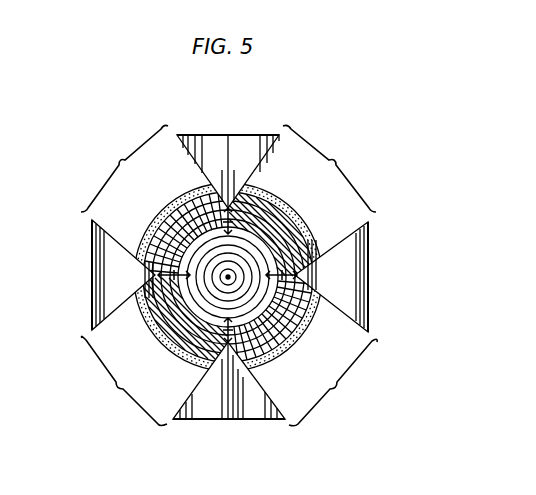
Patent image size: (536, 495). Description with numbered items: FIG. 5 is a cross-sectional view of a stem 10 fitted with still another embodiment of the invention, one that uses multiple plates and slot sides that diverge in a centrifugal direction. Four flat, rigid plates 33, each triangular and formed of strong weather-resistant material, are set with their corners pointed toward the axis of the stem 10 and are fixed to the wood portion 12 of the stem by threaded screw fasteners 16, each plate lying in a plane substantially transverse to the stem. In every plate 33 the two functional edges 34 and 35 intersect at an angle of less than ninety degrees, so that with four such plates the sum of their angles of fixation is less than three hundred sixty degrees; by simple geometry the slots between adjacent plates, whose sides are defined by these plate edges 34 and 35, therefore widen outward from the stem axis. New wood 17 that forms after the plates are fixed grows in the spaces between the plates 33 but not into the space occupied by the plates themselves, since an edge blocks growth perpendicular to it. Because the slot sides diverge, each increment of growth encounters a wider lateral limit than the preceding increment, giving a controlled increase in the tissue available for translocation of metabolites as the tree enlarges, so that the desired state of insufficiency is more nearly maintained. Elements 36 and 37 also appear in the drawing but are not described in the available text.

The stem 10 is at (312, 203).
The wood portion 12 is at (158, 342).
The threaded screw fastener 16 is at (300, 342).
The new wood 17 is at (168, 207).
The plates 33 is at (249, 142).
The plate edge 34 is at (127, 217).
The plate edge 35 is at (195, 159).
The outer edge of shield plate 36 is at (227, 134).
The corner bracket 37 is at (229, 275).